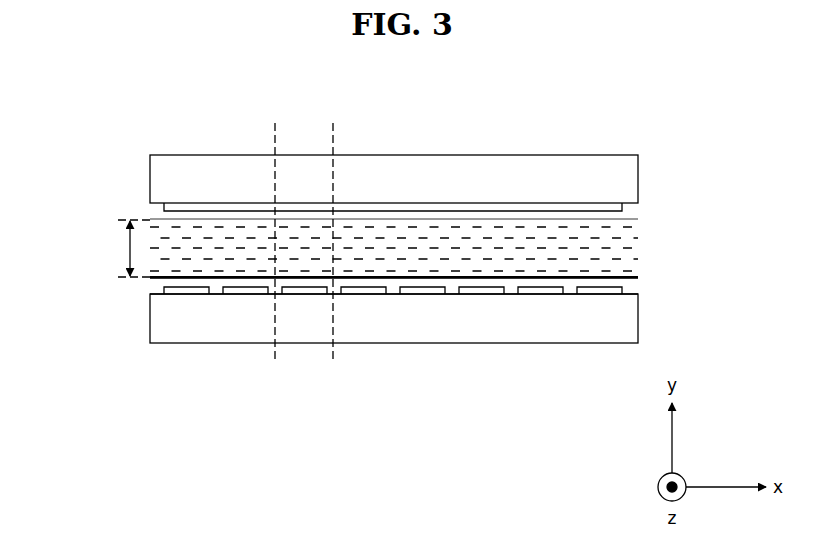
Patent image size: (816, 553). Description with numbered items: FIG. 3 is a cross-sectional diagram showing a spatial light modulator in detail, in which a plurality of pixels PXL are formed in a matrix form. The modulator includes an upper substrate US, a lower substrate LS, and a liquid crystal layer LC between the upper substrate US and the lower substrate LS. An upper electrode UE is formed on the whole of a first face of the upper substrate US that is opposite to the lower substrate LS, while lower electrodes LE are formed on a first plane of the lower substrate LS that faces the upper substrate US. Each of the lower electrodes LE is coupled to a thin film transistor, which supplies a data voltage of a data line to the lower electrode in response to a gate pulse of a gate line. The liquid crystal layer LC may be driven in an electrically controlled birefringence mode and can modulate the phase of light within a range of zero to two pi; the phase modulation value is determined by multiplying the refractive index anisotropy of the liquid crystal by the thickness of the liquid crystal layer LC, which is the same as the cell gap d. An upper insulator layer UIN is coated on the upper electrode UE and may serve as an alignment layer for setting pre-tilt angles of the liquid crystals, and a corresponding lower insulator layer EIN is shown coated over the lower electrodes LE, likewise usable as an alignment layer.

The upper substrate US is at (628, 175).
The upper electrode UE is at (622, 206).
The upper insulator layer UIN is at (630, 213).
The liquid crystal layer LC is at (628, 250).
The lower electrodes LE is at (622, 290).
The lower substrate LS is at (628, 322).
The lower alignment layer EIN is at (568, 288).
The pixel PXL is at (332, 131).
The cell gap d is at (91, 248).